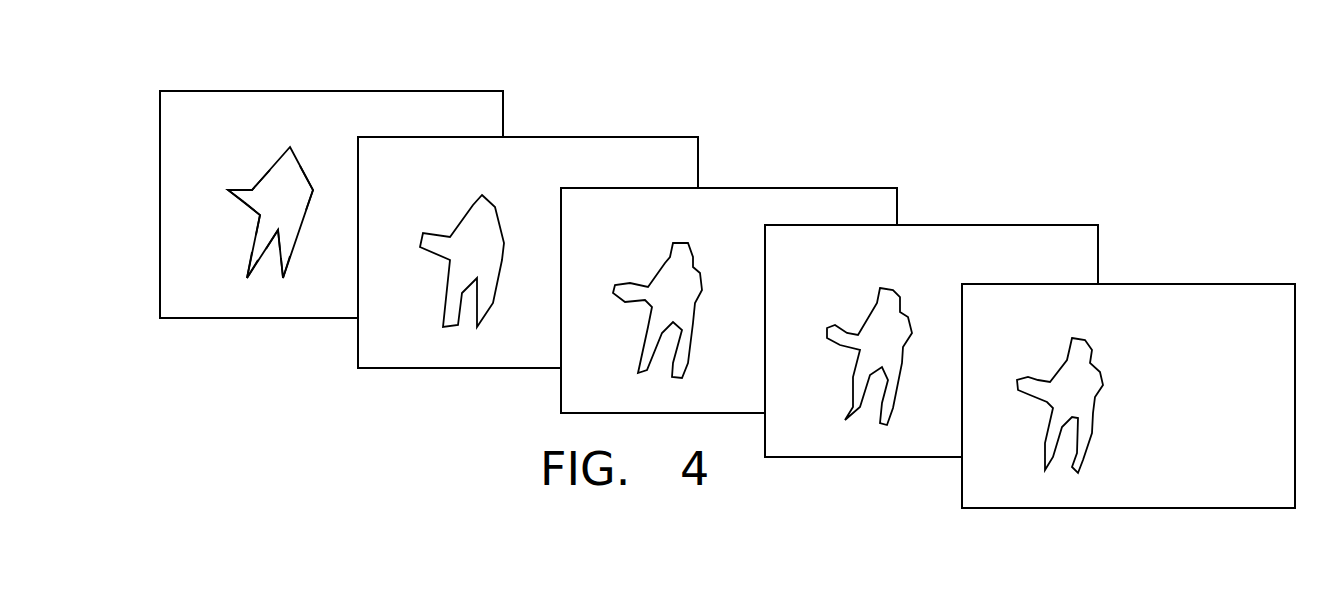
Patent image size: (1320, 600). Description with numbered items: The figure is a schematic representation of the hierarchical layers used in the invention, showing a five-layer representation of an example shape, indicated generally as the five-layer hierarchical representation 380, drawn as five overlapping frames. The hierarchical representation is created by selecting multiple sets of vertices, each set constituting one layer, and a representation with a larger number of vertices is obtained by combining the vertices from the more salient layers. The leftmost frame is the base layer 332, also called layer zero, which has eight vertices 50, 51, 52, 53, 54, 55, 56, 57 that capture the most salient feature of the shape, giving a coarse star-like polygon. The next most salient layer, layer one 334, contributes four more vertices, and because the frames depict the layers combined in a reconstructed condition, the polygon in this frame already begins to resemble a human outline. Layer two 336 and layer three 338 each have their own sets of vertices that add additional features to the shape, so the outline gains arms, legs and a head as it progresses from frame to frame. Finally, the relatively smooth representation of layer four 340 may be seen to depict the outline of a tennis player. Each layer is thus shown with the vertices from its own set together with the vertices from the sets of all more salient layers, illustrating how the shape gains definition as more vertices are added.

The five-layer hierarchical representation 380 is at (288, 63).
The base layer (Layer 0) 332 is at (475, 90).
The Layer 1 334 is at (670, 135).
The Layer 2 336 is at (865, 187).
The Layer 3 338 is at (1070, 225).
The Layer 4 340 is at (1265, 283).
The base layer vertex 50 is at (290, 147).
The base layer vertex 51 is at (313, 190).
The base layer vertex 52 is at (283, 280).
The base layer vertex 53 is at (278, 230).
The base layer vertex 54 is at (247, 278).
The base layer vertex 55 is at (260, 215).
The base layer vertex 56 is at (228, 190).
The base layer vertex 57 is at (252, 188).